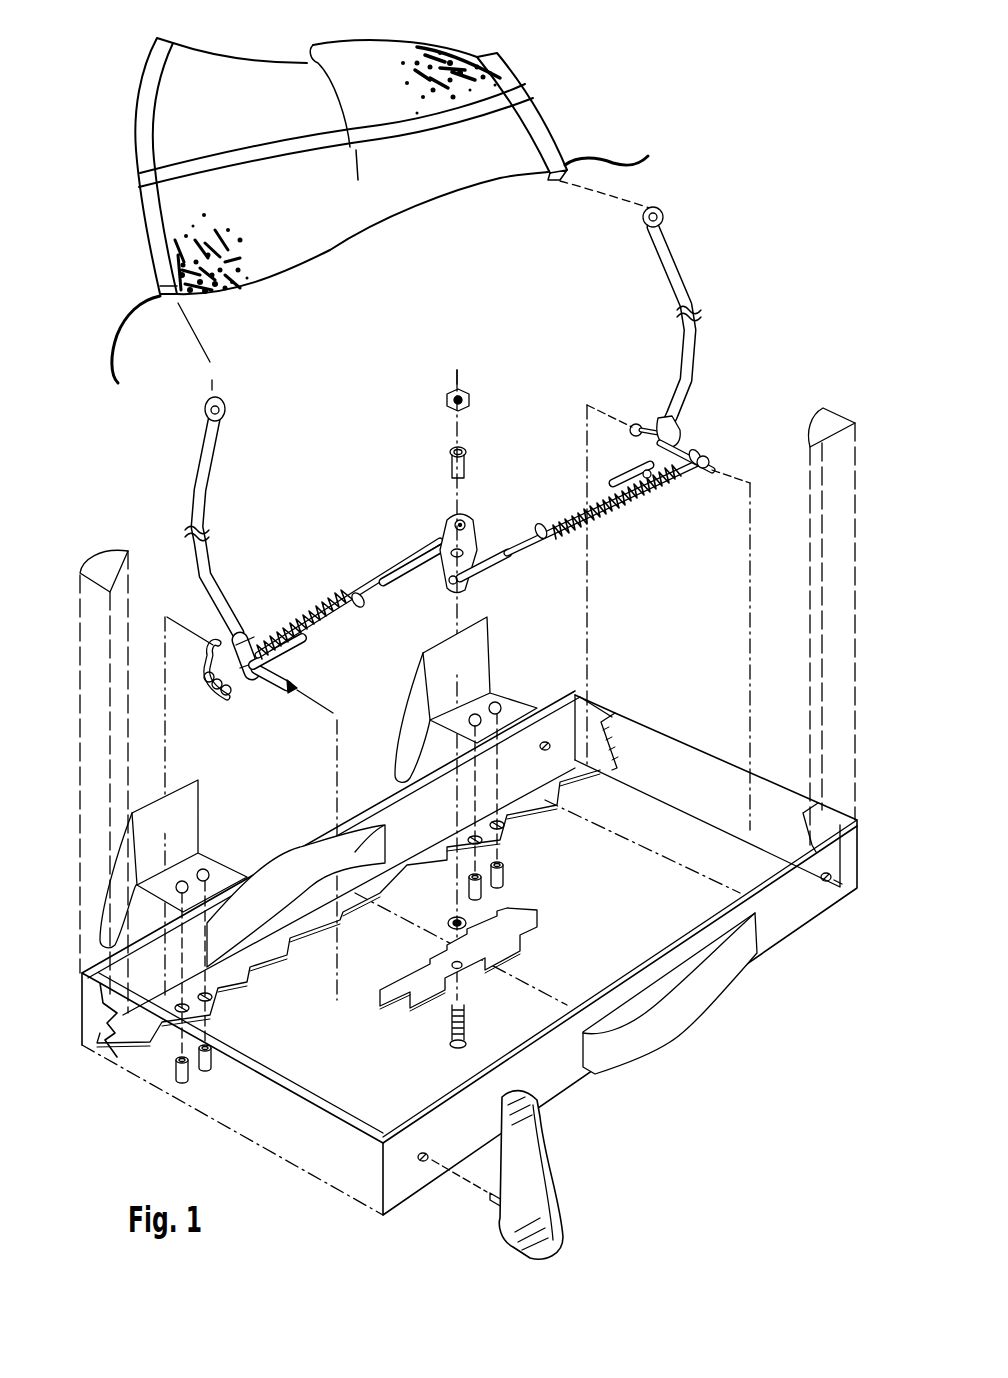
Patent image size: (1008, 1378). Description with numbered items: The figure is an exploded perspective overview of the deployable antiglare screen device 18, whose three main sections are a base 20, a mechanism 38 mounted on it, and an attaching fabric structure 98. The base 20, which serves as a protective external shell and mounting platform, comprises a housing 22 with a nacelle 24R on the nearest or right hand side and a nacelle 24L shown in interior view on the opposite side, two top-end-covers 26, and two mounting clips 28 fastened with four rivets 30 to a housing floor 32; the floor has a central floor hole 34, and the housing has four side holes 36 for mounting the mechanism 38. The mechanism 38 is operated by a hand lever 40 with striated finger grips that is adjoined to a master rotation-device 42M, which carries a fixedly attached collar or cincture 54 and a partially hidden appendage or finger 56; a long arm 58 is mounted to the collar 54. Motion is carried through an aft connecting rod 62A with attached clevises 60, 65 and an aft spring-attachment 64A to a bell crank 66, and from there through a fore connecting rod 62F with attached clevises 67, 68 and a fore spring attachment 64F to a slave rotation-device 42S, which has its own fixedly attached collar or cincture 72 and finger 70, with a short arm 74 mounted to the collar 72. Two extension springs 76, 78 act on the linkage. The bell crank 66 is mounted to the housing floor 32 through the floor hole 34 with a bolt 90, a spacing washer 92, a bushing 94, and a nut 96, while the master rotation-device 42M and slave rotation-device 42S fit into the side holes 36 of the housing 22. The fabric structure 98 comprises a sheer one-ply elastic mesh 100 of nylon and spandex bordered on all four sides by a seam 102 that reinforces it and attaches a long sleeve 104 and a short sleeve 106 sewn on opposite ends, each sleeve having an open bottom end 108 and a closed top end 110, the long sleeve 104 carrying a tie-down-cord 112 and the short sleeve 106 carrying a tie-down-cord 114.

The deployable antiglare screen device 18 is at (720, 1163).
The base 20 is at (814, 1010).
The housing 22 is at (812, 845).
The nacelle 24L is at (357, 850).
The nacelle 24R is at (650, 1040).
The top-end-cover 26 is at (105, 570).
The mounting clip 28 is at (207, 867).
The rivet 30 is at (484, 898).
The housing floor 32 is at (242, 973).
The central floor hole 34 is at (452, 964).
The side hole 36 is at (548, 753).
The mechanism 38 is at (787, 337).
The hand lever 40 is at (558, 1202).
The master rotation-device 42M is at (236, 732).
The slave rotation-device 42S is at (706, 524).
The collar 54 is at (249, 650).
The finger 56 is at (252, 684).
The long arm 58 is at (198, 463).
The clevis 60 is at (296, 650).
The aft connecting rod 62A is at (377, 579).
The fore connecting rod 62F is at (570, 507).
The aft spring-attachment 64A is at (363, 601).
The fore spring attachment 64F is at (544, 539).
The clevis 65 is at (427, 541).
The bell crank 66 is at (478, 548).
The clevis 67 is at (500, 562).
The clevis 68 is at (622, 472).
The finger 70 is at (639, 424).
The collar 72 is at (674, 429).
The short arm 74 is at (677, 257).
The extension spring 76 is at (320, 617).
The extension spring 78 is at (620, 508).
The bolt 90 is at (450, 1037).
The spacing washer 92 is at (451, 918).
The bushing 94 is at (448, 461).
The nut 96 is at (470, 398).
The fabric structure 98 is at (758, 130).
The elastic mesh 100 is at (383, 215).
The seam 102 is at (247, 58).
The long sleeve 104 is at (140, 145).
The short sleeve 106 is at (543, 133).
The open bottom end 108 is at (170, 301).
The closed top end 110 is at (160, 40).
The tie-down-cord 112 is at (132, 313).
The tie-down-cord 114 is at (603, 157).